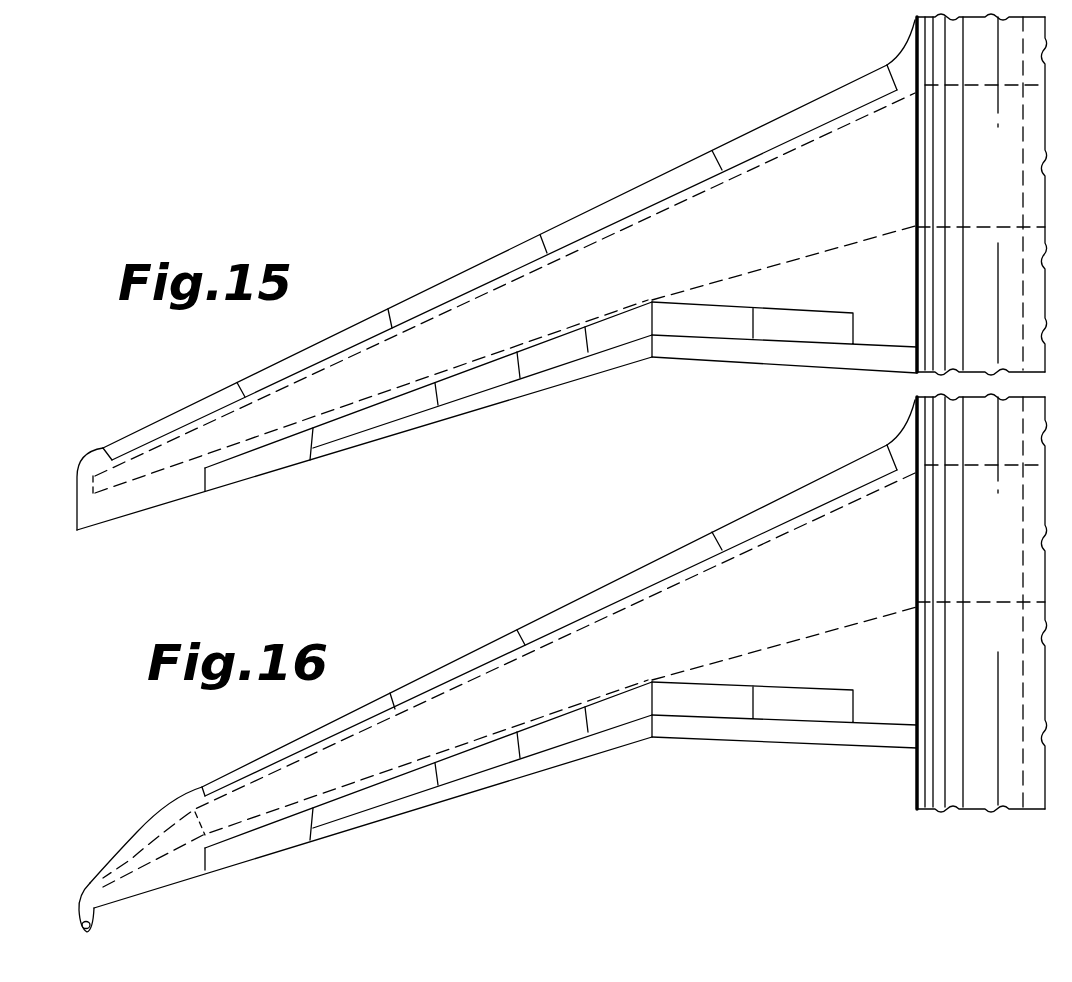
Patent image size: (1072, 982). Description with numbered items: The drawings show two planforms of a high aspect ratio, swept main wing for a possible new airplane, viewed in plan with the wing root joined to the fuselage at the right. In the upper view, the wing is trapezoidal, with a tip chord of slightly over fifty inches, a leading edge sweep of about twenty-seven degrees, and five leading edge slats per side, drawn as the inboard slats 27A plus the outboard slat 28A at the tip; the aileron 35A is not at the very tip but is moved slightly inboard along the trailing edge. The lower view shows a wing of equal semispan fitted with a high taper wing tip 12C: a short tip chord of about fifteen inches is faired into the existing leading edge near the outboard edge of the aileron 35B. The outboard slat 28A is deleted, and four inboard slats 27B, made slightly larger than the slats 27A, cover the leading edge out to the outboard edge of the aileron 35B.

In FIG. 15, the leading edge slats 27A is at (757, 120).
In FIG. 15, the outboard leading edge slat 28A is at (148, 427).
In FIG. 15, the aileron 35A is at (258, 470).
In FIG. 16, the inboard slats 27B is at (757, 500).
In FIG. 16, the high taper wing tip 12C is at (152, 818).
In FIG. 16, the aileron 35B is at (258, 860).